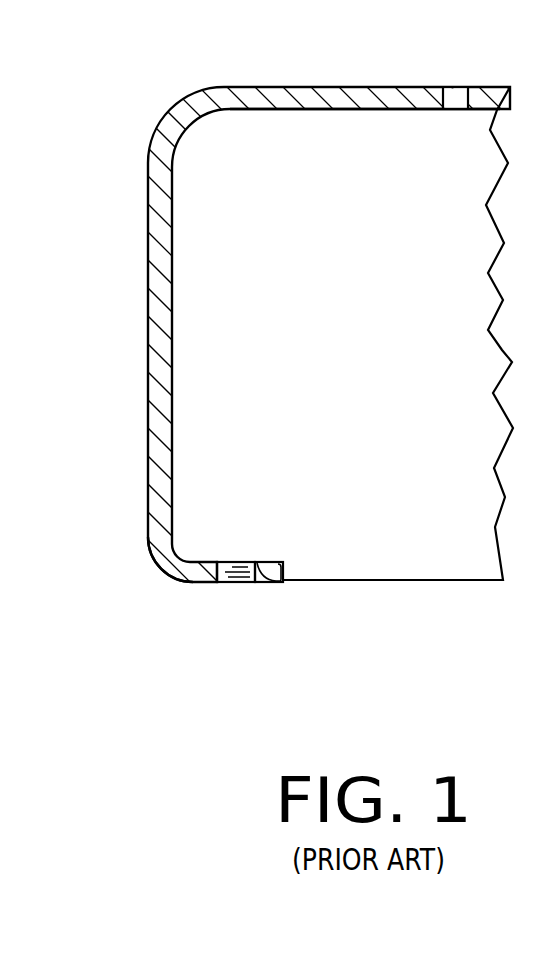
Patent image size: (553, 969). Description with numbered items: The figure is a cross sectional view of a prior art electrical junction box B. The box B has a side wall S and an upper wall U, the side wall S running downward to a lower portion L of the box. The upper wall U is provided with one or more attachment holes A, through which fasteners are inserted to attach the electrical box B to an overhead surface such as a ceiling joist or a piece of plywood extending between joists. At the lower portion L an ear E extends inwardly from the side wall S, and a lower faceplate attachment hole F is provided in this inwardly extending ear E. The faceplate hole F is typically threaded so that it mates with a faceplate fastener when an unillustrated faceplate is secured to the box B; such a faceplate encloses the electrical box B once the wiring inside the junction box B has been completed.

The attachment hole A is at (451, 97).
The electrical box B is at (354, 332).
The ear E is at (268, 560).
The faceplate attachment hole F is at (242, 583).
The lower portion L is at (167, 570).
The side wall S is at (148, 217).
The upper wall U is at (344, 110).